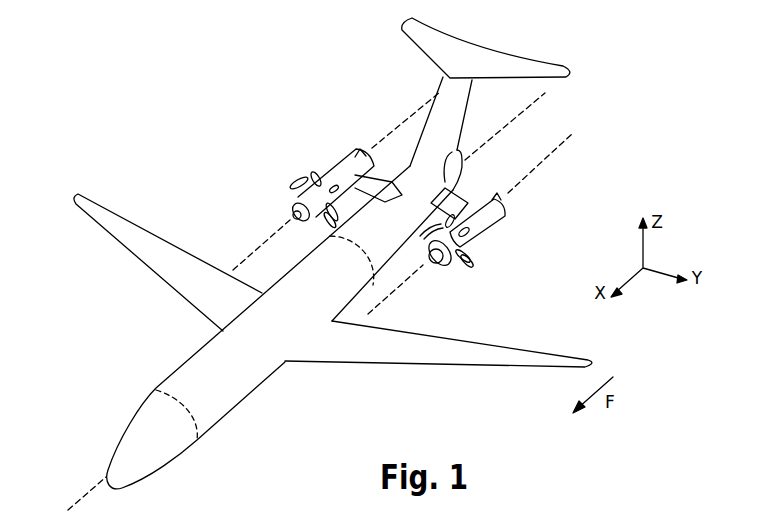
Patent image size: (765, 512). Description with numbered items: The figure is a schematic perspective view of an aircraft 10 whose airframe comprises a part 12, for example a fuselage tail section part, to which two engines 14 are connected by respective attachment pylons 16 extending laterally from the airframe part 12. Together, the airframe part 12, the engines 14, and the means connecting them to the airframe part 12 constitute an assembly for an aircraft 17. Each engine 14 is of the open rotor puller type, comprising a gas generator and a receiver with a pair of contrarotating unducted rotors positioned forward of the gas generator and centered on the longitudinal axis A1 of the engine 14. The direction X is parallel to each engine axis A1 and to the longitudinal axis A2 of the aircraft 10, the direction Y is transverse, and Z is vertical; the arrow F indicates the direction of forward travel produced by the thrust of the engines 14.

The aircraft 10 is at (333, 253).
The airframe part 12 is at (458, 196).
The engine 14 is at (333, 168).
The attachment pylon 16 is at (353, 153).
The assembly for an aircraft 17 is at (480, 264).
The longitudinal axis of the engine A1 is at (415, 110).
The longitudinal axis of the aircraft A2 is at (42, 510).